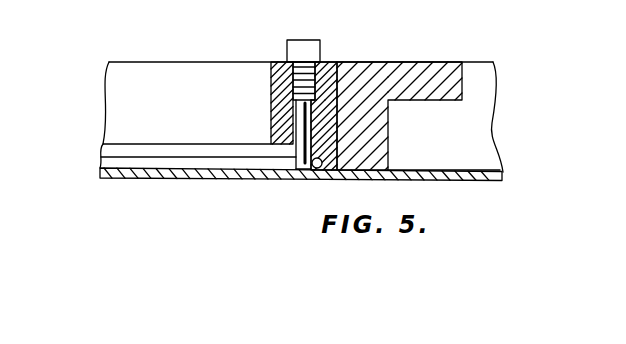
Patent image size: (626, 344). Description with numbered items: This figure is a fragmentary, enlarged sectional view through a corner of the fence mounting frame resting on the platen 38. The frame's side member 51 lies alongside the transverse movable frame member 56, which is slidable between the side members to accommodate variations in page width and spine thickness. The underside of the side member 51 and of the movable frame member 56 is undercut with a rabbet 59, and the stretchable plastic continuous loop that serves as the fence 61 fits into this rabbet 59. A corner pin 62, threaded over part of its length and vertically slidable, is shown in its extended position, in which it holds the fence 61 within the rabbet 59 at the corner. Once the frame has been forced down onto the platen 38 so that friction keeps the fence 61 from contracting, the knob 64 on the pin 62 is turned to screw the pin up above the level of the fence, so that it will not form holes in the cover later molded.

The platen 38 is at (197, 175).
The side member 51 is at (192, 77).
The movable frame member 56 is at (360, 75).
The rabbet 59 is at (323, 159).
The stretchable fence 61 is at (317, 170).
The corner pin 62 is at (303, 118).
The knob 64 is at (303, 50).